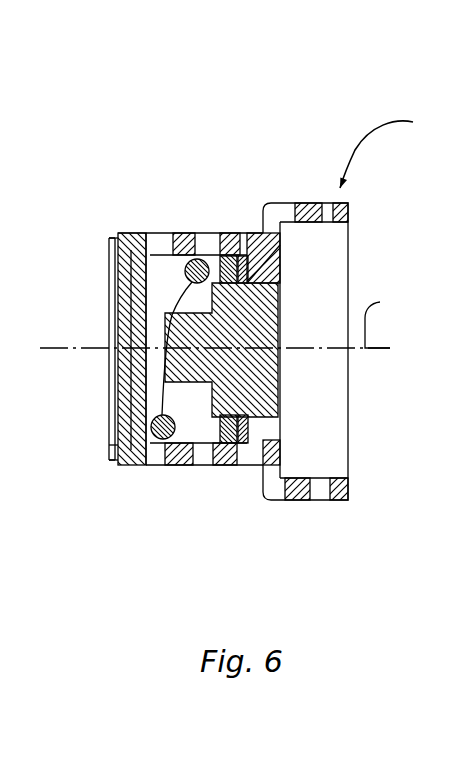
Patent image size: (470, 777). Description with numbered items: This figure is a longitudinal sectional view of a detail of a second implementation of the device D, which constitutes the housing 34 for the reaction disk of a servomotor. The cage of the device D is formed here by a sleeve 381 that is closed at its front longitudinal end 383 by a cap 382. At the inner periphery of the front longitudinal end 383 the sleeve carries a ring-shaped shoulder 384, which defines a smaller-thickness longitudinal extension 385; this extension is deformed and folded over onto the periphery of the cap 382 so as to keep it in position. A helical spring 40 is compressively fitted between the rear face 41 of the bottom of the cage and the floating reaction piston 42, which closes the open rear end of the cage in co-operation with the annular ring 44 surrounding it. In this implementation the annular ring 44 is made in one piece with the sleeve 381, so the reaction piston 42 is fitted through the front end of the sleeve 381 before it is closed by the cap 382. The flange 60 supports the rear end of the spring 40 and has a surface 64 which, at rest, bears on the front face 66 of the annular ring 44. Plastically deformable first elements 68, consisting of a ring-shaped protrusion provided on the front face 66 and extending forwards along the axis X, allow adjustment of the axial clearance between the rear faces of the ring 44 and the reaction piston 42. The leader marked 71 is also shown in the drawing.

The housing 34 is at (337, 275).
The annular ring 44 is at (280, 261).
The axis X is at (381, 323).
The device D is at (387, 149).
The sleeve 381 is at (212, 232).
The cap 382 is at (113, 238).
The front longitudinal end 383 is at (110, 445).
The ring-shaped shoulder 384 is at (110, 262).
The longitudinal extension 385 is at (112, 460).
The rear face 41 is at (137, 392).
The helical spring 40 is at (162, 440).
The reaction piston 42 is at (198, 458).
The flange 60 is at (236, 445).
The surface 64 is at (237, 232).
The front face 66 is at (235, 457).
The first elements 68 is at (250, 232).
The arrow / movement indicator 71 is at (141, 232).